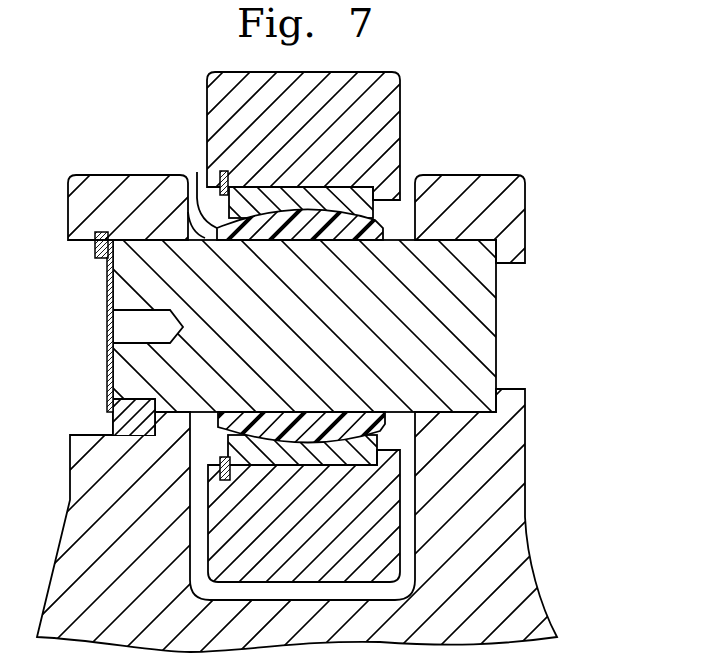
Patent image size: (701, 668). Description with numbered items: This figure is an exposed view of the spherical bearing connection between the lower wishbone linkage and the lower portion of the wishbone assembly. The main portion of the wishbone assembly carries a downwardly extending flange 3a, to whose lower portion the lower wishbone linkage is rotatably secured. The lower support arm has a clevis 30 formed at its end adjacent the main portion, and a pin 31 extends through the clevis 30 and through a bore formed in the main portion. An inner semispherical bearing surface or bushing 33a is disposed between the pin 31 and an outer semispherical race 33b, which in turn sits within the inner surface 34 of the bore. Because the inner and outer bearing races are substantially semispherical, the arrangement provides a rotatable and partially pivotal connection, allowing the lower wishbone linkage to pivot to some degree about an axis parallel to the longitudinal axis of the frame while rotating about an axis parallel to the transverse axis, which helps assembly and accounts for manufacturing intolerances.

The downwardly extending flange 3a is at (382, 95).
The inner surface of the bore 34 is at (345, 187).
The outer semispherical race 33b is at (360, 213).
The inner semispherical bearing surface or bushing 33a is at (197, 172).
The clevis 30 is at (516, 212).
The pin 31 is at (486, 311).